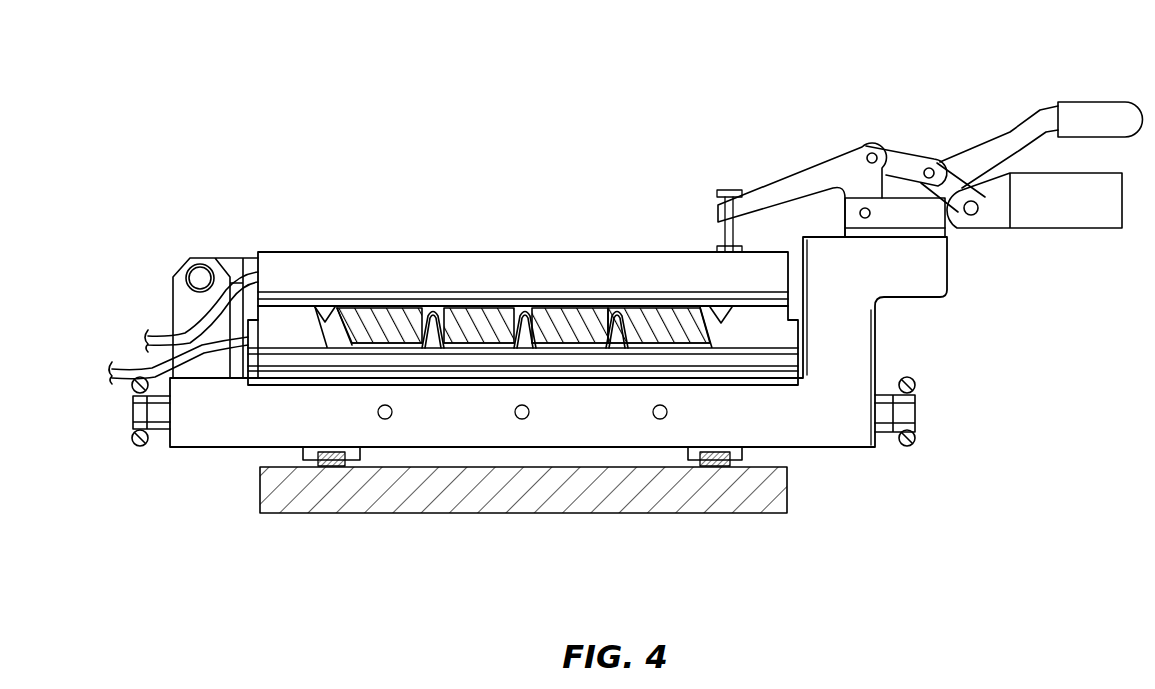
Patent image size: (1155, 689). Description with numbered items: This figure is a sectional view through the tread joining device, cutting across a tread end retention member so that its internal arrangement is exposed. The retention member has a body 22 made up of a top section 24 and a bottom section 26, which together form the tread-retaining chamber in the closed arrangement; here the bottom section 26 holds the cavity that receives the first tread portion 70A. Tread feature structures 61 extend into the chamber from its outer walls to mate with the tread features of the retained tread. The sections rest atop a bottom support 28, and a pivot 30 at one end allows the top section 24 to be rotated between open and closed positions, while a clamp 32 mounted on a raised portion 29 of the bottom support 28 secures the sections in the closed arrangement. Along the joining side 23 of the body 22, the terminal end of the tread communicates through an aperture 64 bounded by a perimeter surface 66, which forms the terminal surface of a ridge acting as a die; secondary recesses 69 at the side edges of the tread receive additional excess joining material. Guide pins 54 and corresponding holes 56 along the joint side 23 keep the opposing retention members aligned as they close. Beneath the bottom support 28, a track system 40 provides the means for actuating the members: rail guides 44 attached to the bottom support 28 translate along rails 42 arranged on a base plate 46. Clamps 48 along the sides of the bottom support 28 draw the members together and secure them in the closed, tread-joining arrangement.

The body 22 is at (705, 252).
The joining side 23 is at (400, 252).
The top section 24 is at (276, 253).
The bottom section 26 is at (790, 339).
The bottom support 28 is at (828, 433).
The raised portion 29 is at (925, 298).
The pivot 30 is at (205, 258).
The clamp 32 is at (1035, 108).
The track system 40 is at (658, 537).
The rail 42 is at (333, 463).
The rail guide 44 is at (362, 455).
The base plate 46 is at (540, 515).
The clamp 48 is at (133, 412).
The guide pin 54 is at (378, 414).
The hole 56 is at (515, 414).
The tread feature structure 61 is at (615, 320).
The aperture 64 is at (410, 320).
The perimeter surface 66 is at (375, 305).
The secondary recess 69 is at (325, 305).
The first tread portion 70A is at (485, 330).